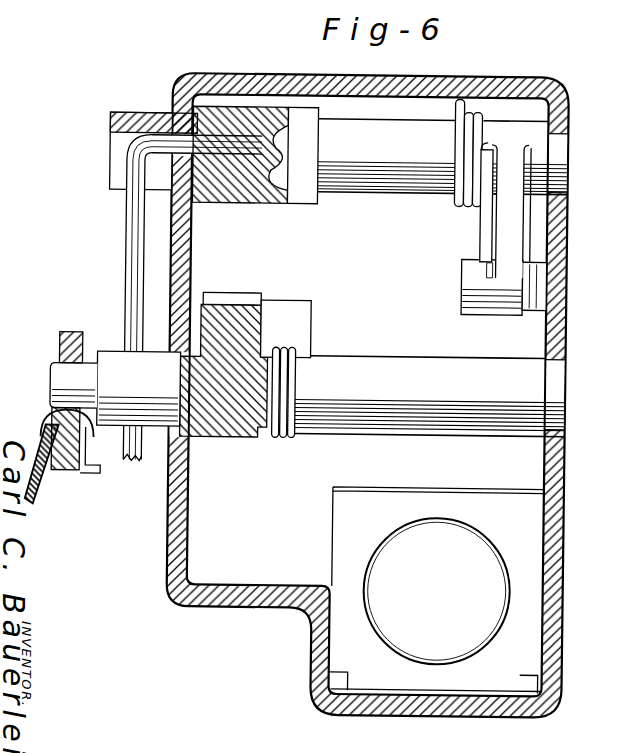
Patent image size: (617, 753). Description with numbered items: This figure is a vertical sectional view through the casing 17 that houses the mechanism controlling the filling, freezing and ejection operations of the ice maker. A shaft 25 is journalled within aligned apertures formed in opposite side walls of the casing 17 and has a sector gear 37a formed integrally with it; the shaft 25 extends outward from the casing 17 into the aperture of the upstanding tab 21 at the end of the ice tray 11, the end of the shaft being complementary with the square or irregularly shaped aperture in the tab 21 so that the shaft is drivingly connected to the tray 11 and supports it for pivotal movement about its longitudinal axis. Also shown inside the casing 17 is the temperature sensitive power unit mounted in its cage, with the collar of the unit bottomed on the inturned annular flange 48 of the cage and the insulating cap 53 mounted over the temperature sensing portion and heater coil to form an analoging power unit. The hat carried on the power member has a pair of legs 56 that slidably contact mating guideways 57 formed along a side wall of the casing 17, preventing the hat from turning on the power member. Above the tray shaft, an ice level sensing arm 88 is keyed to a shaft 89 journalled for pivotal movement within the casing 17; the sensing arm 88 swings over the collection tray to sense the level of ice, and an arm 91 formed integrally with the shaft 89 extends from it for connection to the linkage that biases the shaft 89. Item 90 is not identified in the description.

The ice tray 11 is at (32, 497).
The casing 17 is at (560, 306).
The tab 21 is at (60, 343).
The shaft 25 is at (55, 382).
The sector gear 37a is at (272, 334).
The inturned annular flange 48 is at (440, 512).
The insulating cap 53 is at (470, 562).
The legs 56 is at (616, 624).
The guideways 57 is at (616, 668).
The ice level sensing arm 88 is at (133, 282).
The shaft 89 is at (364, 175).
The plate 90 is at (476, 238).
The arm 91 is at (512, 230).